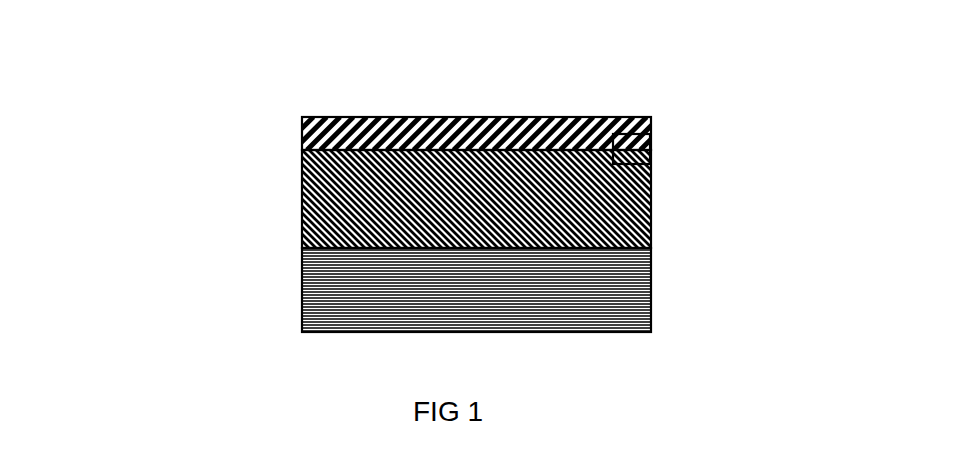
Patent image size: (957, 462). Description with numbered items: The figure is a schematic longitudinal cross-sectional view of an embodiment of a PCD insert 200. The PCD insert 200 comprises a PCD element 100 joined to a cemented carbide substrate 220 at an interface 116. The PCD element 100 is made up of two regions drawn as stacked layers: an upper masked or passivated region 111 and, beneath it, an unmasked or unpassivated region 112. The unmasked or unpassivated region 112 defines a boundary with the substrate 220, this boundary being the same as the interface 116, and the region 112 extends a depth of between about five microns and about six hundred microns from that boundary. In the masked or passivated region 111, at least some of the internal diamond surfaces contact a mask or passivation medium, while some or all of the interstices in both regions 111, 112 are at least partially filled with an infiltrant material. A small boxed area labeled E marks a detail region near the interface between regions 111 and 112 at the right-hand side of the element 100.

The PCD insert 200 is at (261, 85).
The PCD element 100 is at (302, 248).
The masked or passivated region 111 is at (302, 135).
The unmasked or unpassivated region 112 is at (302, 200).
The interface 116 is at (651, 247).
The cemented carbide substrate 220 is at (302, 312).
The enlarged region E is at (651, 147).